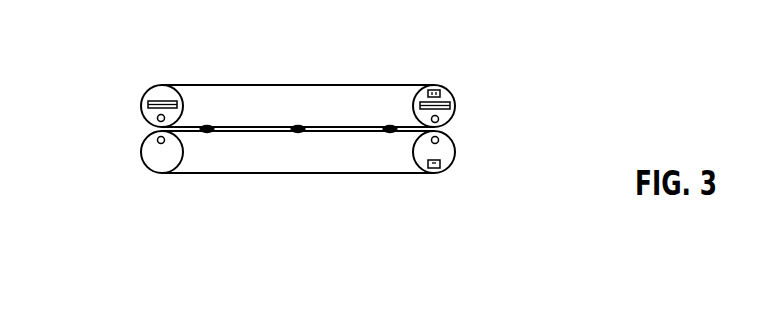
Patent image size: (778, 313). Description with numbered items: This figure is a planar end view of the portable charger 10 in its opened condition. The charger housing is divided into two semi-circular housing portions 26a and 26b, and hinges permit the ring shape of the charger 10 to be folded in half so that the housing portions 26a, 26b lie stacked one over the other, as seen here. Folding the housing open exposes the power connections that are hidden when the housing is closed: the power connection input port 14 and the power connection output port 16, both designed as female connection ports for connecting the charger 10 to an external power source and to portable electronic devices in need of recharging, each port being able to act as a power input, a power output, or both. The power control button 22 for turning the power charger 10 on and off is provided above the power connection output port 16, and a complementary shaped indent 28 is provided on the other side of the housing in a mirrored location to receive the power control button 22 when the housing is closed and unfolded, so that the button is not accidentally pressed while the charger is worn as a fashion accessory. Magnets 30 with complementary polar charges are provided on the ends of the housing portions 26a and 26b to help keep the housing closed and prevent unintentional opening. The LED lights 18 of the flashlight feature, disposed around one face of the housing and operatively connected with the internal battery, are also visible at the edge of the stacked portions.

The portable charger 10 is at (158, 223).
The power connection input port 14 is at (143, 106).
The power connection output port 16 is at (450, 105).
The LED lights 18 is at (232, 186).
The power control button 22 is at (455, 92).
The semi-circular housing portion 26a is at (330, 95).
The semi-circular housing portion 26b is at (330, 160).
The indent 28 is at (433, 170).
The magnets 30 is at (158, 139).